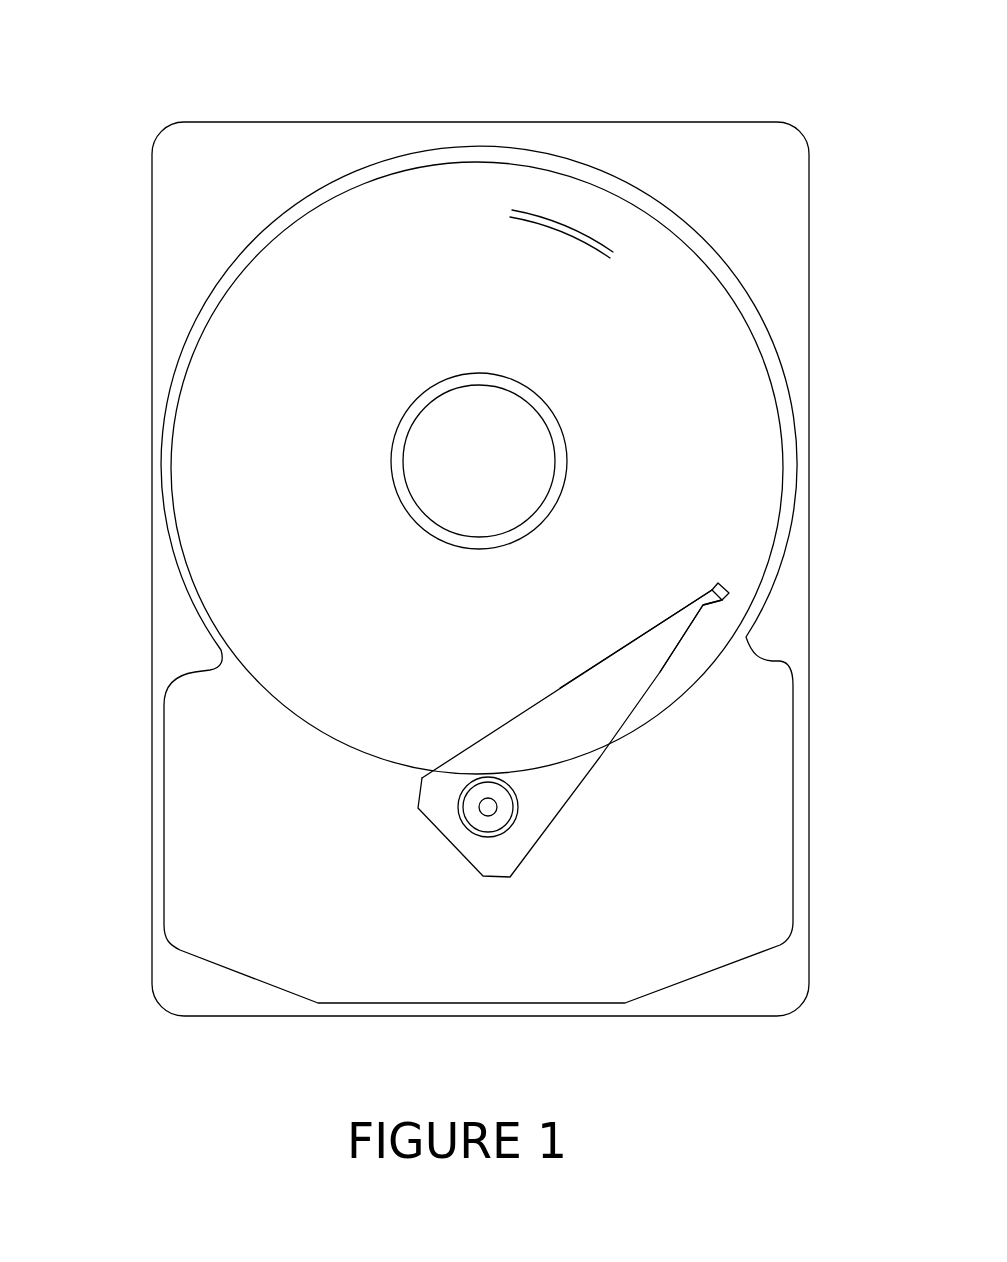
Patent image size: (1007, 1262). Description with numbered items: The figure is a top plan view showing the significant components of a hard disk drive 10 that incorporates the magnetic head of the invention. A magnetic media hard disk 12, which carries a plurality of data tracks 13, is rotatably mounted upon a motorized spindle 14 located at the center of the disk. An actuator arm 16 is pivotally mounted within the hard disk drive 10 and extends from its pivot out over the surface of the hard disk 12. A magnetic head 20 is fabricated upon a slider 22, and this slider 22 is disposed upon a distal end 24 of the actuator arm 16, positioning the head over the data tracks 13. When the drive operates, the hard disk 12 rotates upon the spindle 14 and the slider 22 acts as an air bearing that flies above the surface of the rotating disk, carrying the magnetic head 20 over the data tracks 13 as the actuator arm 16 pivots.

The hard disk drive 10 is at (98, 175).
The magnetic media hard disk 12 is at (363, 240).
The data tracks 13 is at (535, 212).
The motorized spindle 14 is at (508, 392).
The actuator arm 16 is at (557, 750).
The magnetic head 20 is at (816, 567).
The slider 22 is at (728, 584).
The distal end 24 is at (703, 608).